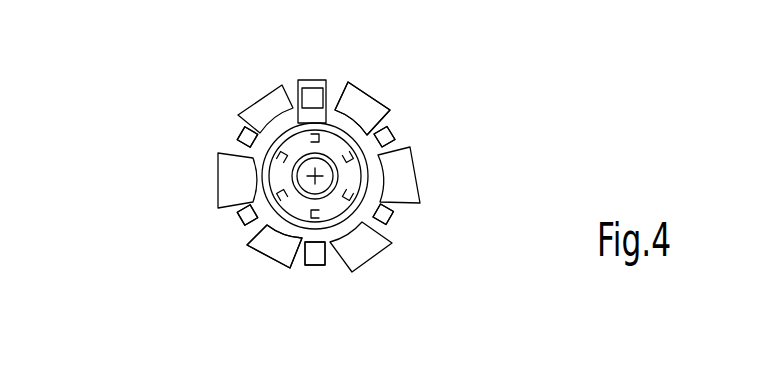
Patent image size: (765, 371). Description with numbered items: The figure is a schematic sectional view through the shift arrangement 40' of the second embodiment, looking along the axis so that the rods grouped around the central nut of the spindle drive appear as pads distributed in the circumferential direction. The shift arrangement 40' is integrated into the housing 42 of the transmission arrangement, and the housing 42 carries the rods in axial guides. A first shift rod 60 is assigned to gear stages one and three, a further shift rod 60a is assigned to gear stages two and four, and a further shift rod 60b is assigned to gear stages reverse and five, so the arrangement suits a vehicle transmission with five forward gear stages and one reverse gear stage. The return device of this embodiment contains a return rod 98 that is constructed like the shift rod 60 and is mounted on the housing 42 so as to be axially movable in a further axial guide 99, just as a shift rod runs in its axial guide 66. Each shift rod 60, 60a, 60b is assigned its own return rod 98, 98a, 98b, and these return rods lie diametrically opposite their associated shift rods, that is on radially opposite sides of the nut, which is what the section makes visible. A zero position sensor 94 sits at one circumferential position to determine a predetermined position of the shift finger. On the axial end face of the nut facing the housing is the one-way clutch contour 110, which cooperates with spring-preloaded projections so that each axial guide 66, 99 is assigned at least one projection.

The shift arrangement 40' is at (447, 129).
The housing 42 is at (264, 93).
The shift rod 60 is at (336, 106).
The shift rod 60a is at (238, 129).
The shift rod 60b is at (398, 135).
The axial guide 66 is at (341, 103).
The zero position sensor 94 is at (238, 178).
The return rod 98 is at (325, 258).
The return rod 98a is at (395, 213).
The return rod 98b is at (240, 217).
The further axial guide 99 is at (295, 245).
The one-way clutch contour 110 is at (268, 228).